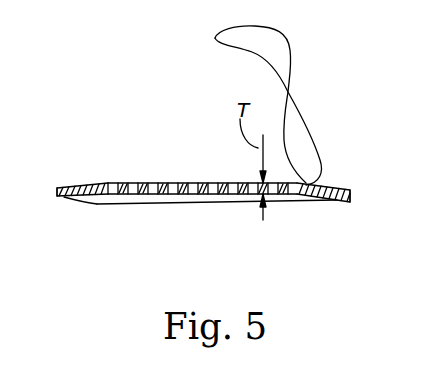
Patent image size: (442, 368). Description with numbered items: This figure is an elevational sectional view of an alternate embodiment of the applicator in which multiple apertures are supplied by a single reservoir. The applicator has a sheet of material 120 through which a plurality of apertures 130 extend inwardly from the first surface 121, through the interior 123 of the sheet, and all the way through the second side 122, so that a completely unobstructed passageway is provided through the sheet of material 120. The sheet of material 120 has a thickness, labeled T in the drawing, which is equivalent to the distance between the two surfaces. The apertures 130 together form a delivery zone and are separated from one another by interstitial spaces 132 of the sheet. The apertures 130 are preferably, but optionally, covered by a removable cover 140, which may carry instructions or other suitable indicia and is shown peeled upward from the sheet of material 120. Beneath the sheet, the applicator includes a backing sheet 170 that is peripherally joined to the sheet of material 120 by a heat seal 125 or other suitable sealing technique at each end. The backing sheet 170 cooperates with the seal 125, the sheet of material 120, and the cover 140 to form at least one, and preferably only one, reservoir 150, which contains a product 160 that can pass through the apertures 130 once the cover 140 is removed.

The sheet of material 120 is at (332, 186).
The first surface 121 is at (94, 183).
The second side 122 is at (86, 198).
The interior 123 is at (104, 183).
The heat seal 125 is at (68, 199).
The apertures 130 is at (210, 183).
The interstitial spaces 132 is at (165, 183).
The removable cover 140 is at (280, 55).
The reservoir 150 is at (153, 199).
The product 160 is at (232, 199).
The backing sheet 170 is at (285, 201).